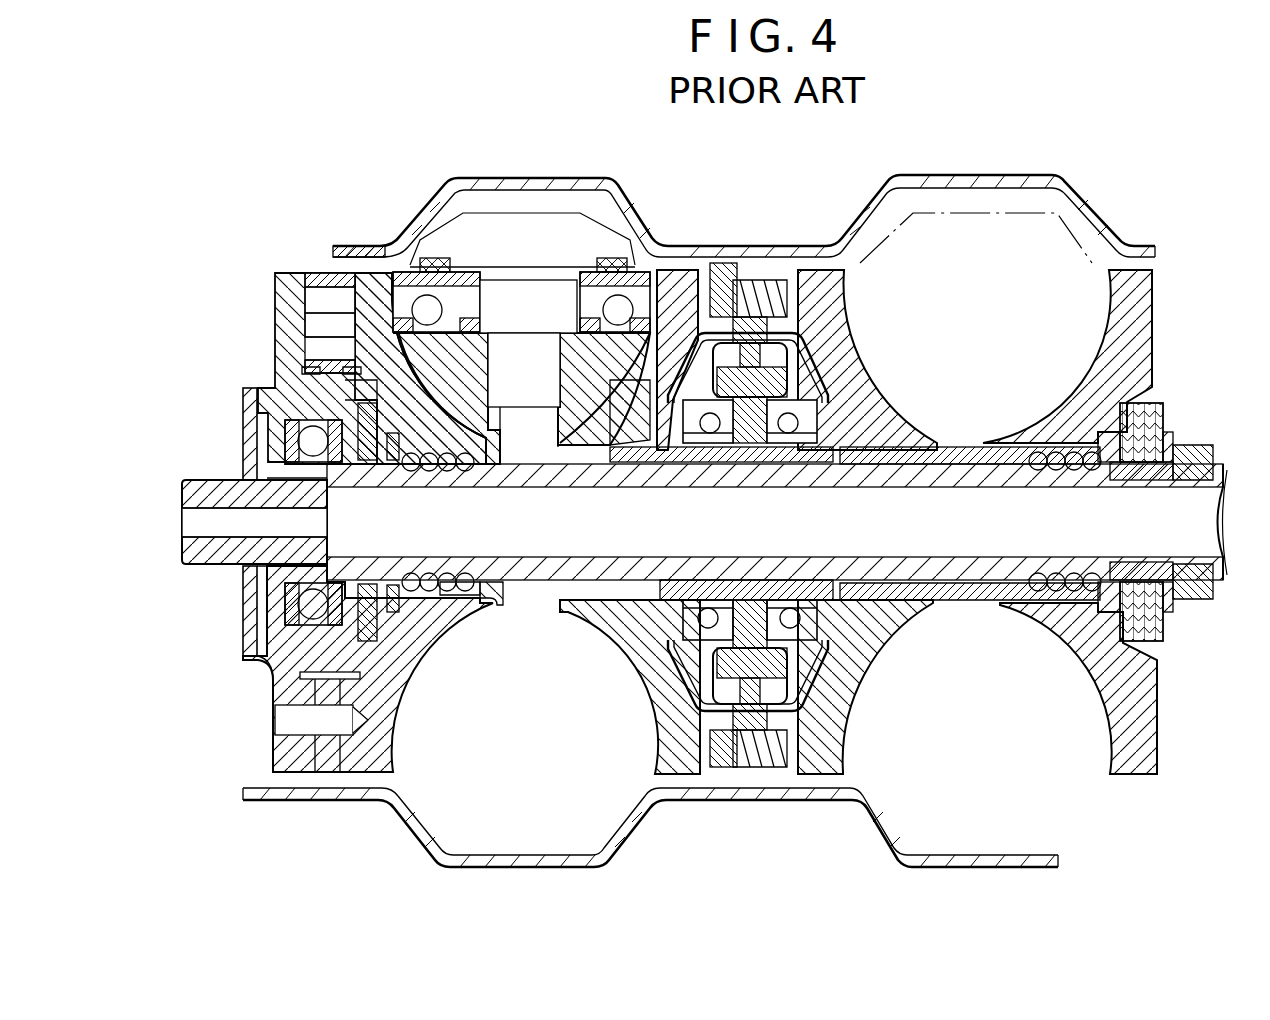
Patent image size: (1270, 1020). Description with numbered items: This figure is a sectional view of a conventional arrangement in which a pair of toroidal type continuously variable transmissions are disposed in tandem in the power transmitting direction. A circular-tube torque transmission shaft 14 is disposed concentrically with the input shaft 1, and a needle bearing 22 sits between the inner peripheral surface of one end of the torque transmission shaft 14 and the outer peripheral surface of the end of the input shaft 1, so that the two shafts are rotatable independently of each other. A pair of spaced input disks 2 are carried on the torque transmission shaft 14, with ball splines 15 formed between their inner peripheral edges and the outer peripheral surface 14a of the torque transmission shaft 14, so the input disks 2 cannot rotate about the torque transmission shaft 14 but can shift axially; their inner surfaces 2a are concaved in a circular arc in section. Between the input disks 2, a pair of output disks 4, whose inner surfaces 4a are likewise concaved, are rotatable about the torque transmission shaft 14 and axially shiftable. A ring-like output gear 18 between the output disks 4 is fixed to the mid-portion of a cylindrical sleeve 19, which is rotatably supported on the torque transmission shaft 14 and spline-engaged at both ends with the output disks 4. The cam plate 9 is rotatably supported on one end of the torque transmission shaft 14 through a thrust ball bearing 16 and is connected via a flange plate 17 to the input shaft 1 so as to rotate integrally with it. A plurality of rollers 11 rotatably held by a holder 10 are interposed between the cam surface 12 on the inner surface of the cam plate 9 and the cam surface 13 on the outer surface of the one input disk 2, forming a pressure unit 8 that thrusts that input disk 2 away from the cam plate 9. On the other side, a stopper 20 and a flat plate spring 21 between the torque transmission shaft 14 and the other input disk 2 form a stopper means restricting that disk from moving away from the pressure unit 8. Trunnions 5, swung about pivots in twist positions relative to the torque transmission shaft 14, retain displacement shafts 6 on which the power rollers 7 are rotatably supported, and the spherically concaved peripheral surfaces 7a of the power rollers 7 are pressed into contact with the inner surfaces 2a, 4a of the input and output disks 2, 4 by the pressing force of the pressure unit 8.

The input shaft 1 is at (183, 505).
The input disk 2 is at (372, 283).
The inner surface of input disk 2a is at (420, 648).
The output disk 4 is at (685, 287).
The inner surface of output disk 4a is at (615, 655).
The trunnion 5 is at (560, 232).
The displacement shaft 6 is at (540, 407).
The power roller 7 is at (620, 440).
The peripheral surface of power roller 7a is at (665, 380).
The pressure unit 8 is at (319, 304).
The cam plate 9 is at (283, 300).
The holder 10 is at (325, 275).
The roller 11 is at (318, 300).
The cam surface 12 is at (318, 328).
The cam surface 13 is at (352, 330).
The torque transmission shaft 14 is at (960, 592).
The outer peripheral surface of torque transmission shaft 14a is at (932, 585).
The ball spline 15 is at (1140, 425).
The thrust ball bearing 16 is at (290, 423).
The flange plate 17 is at (250, 440).
The output gear 18 is at (768, 680).
The sleeve 19 is at (800, 464).
The stopper 20 is at (1180, 598).
The flat plate spring 21 is at (1155, 415).
The needle bearing 22 is at (290, 487).